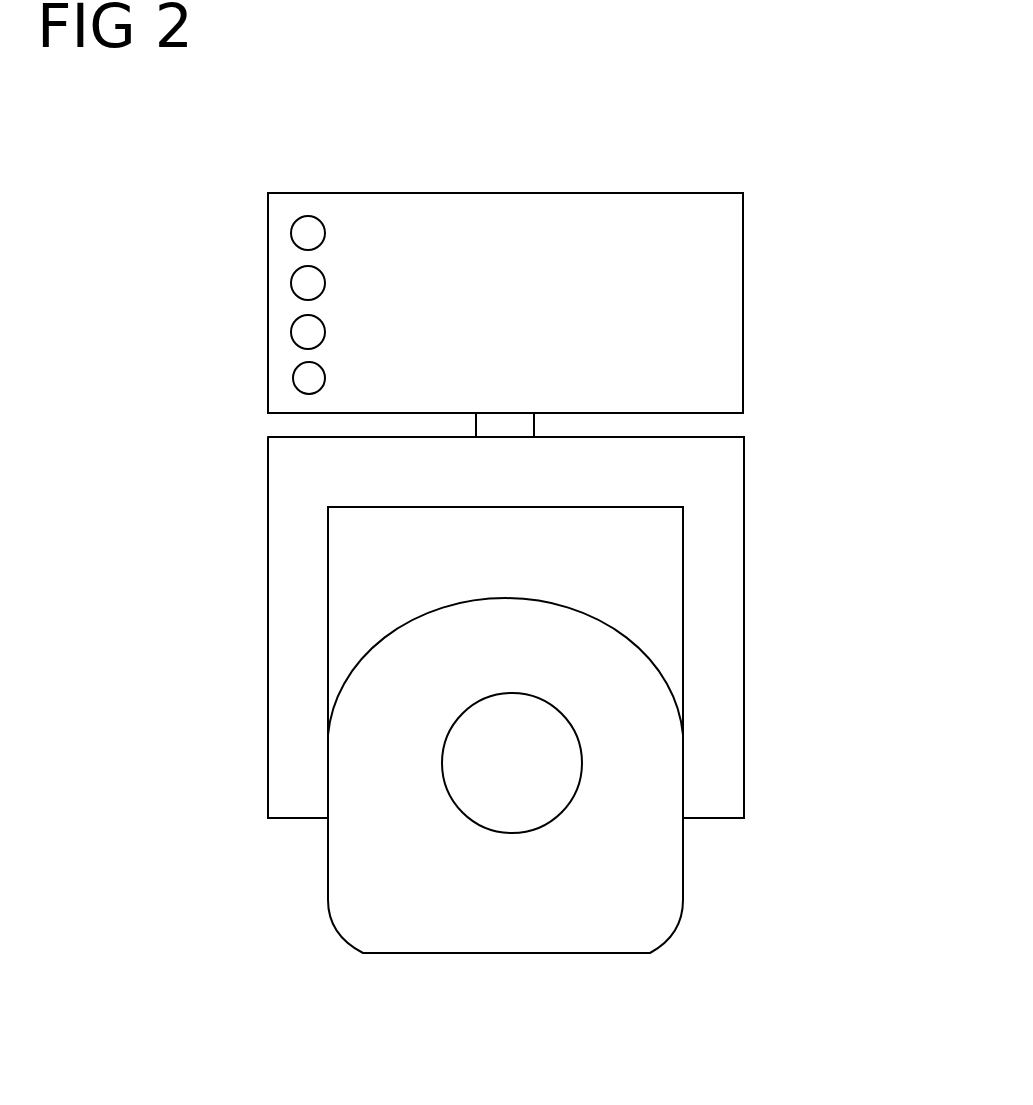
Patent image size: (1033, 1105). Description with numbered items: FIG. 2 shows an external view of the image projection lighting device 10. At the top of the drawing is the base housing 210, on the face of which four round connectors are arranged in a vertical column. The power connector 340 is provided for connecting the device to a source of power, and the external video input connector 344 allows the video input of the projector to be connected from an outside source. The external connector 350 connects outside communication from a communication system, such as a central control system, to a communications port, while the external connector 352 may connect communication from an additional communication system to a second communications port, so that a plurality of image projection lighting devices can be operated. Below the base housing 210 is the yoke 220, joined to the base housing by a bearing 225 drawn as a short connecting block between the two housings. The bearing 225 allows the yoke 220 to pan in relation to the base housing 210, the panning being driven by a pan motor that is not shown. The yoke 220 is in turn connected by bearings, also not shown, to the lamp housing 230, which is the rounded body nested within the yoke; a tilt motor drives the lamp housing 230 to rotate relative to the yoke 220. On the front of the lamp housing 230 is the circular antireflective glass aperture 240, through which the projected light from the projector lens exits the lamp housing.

The image projection lighting device 10 is at (848, 277).
The base housing 210 is at (337, 177).
The yoke 220 is at (243, 642).
The bearing 225 is at (503, 418).
The lamp housing 230 is at (640, 624).
The antireflective glass aperture 240 is at (607, 772).
The power connector 340 is at (288, 242).
The external video input connector 344 is at (282, 291).
The external connector 350 is at (287, 343).
The external connector 352 is at (290, 377).